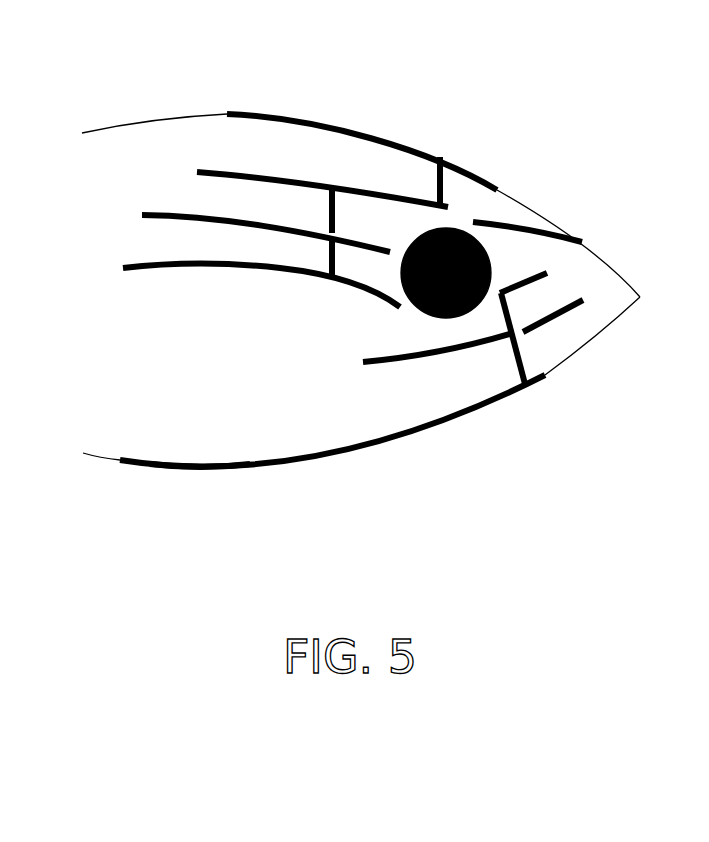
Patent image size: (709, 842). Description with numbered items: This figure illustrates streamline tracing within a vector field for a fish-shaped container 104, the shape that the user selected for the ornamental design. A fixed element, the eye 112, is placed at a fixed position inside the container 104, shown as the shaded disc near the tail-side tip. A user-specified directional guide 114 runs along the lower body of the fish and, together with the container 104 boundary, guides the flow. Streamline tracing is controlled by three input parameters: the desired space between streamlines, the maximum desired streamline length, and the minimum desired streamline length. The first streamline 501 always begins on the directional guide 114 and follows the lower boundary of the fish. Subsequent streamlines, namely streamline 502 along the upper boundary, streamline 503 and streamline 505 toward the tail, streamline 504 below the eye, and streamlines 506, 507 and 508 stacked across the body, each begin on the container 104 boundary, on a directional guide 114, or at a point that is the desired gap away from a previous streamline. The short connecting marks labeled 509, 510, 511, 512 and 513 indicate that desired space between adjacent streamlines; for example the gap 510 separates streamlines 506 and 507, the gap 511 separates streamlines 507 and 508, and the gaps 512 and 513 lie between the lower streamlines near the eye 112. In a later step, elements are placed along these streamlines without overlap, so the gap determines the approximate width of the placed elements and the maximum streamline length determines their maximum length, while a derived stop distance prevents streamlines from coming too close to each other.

The container 104 is at (93, 458).
The directional guide 114 is at (190, 470).
The eye 112 is at (426, 286).
The first streamline 501 is at (160, 460).
The streamline 502 is at (330, 127).
The streamline 503 is at (528, 227).
The streamline 504 is at (397, 367).
The streamline 505 is at (540, 273).
The streamline 506 is at (205, 175).
The streamline 507 is at (167, 220).
The streamline 508 is at (167, 263).
The space between streamlines 509 is at (442, 190).
The space between streamlines 510 is at (328, 213).
The space between streamlines 511 is at (335, 259).
The space between streamlines 512 is at (510, 312).
The space between streamlines 513 is at (523, 367).